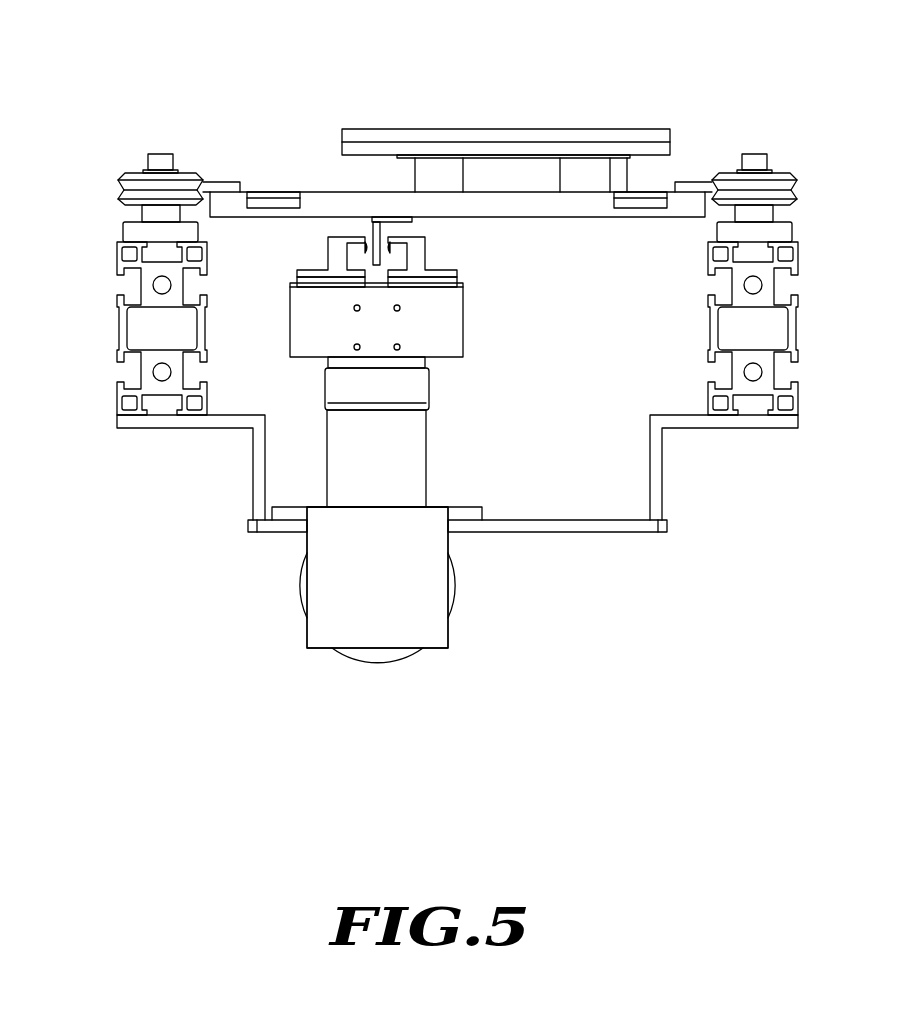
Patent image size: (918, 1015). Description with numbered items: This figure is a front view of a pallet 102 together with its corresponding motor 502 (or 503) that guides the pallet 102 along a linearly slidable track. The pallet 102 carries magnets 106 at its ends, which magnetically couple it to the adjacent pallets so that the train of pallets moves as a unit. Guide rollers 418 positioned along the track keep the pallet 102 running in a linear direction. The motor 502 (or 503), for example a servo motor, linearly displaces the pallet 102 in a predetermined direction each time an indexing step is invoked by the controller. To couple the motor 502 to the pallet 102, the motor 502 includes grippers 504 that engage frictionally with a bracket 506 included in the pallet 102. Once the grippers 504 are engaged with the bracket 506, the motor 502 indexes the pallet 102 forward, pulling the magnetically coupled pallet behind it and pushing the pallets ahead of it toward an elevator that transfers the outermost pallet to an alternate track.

The pallet 102 is at (468, 130).
The magnets 106 is at (260, 205).
The guide rollers 418 is at (116, 178).
The motor 502 is at (443, 330).
The motor 503 is at (377, 577).
The grippers 504 is at (332, 255).
The bracket 506 is at (373, 230).